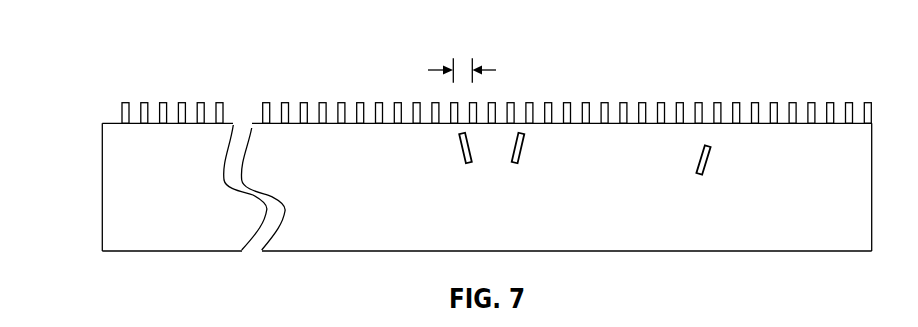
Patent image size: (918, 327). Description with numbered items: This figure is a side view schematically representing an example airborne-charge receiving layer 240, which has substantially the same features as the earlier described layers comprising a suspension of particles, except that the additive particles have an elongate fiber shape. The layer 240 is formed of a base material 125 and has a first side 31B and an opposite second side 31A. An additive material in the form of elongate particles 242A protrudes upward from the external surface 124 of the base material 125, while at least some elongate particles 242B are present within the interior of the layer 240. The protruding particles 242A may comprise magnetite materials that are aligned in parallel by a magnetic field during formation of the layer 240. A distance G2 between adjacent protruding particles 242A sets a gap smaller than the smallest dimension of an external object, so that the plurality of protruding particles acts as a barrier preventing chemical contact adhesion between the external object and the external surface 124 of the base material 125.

The airborne-charge receiving layer 240 is at (443, 160).
The external surface 124 is at (457, 94).
The protruding elongate particles 242A is at (320, 102).
The interior elongate particles 242B is at (707, 160).
The base material 125 is at (634, 230).
The second side 31A is at (700, 251).
The first side 31B is at (666, 76).
The distance between adjacent particles G2 is at (462, 59).